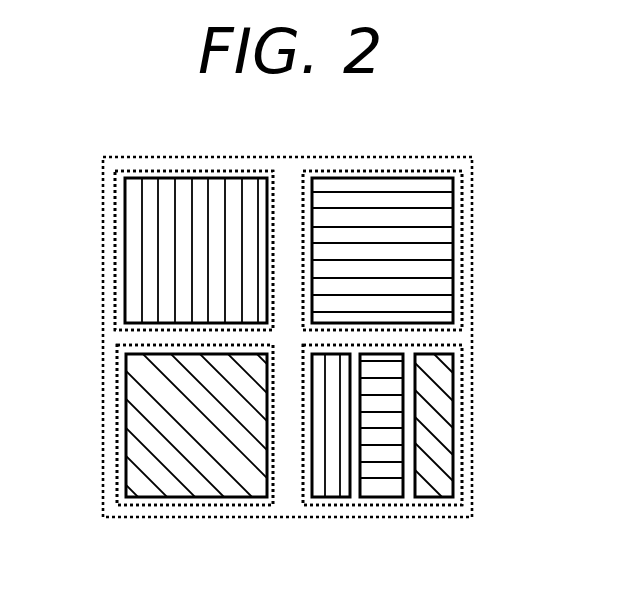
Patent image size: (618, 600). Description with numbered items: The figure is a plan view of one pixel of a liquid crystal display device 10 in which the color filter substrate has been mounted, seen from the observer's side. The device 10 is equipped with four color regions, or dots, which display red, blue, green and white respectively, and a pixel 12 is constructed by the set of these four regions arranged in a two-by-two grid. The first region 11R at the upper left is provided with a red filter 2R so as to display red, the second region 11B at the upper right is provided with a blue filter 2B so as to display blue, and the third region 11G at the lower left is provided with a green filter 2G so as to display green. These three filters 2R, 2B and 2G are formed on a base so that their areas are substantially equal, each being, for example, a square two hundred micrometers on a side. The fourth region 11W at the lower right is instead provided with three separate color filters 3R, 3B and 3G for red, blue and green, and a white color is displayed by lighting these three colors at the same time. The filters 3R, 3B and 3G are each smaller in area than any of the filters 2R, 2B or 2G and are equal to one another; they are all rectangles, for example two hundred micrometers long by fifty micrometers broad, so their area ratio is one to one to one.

The liquid crystal display device 10 is at (483, 152).
The pixel 12 is at (472, 350).
The first region 11R is at (118, 268).
The third region 11G is at (118, 412).
The second region 11B is at (462, 193).
The fourth region 11W is at (462, 405).
The red filter 2R is at (137, 224).
The green filter 2G is at (197, 483).
The blue filter 2B is at (438, 267).
The red color filter 3R is at (335, 477).
The blue color filter 3B is at (383, 483).
The green color filter 3G is at (427, 477).